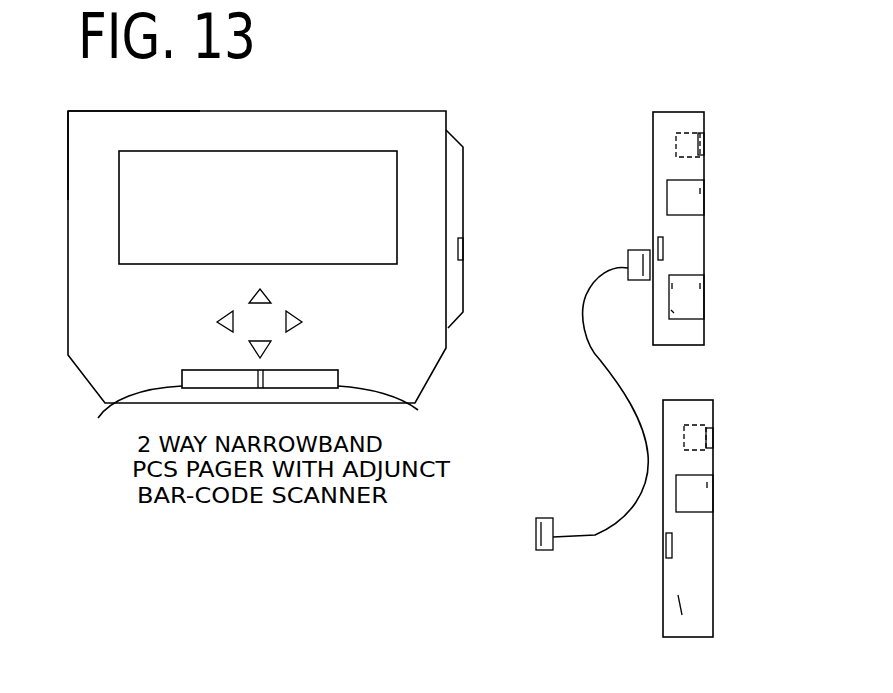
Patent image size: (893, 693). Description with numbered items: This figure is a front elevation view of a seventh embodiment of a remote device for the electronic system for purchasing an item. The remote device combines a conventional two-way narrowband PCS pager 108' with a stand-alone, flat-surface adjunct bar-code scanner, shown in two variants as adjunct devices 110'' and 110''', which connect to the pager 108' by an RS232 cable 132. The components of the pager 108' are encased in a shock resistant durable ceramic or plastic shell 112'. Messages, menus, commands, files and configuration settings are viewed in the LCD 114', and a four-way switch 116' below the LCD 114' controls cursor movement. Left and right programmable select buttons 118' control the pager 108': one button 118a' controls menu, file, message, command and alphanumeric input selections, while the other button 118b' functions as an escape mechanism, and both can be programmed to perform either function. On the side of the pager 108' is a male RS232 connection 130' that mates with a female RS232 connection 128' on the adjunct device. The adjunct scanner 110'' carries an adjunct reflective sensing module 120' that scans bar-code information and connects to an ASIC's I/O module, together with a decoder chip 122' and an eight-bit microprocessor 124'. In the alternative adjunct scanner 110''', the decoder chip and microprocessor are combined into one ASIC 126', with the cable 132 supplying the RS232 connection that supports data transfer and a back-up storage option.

The two-way pager 108' is at (265, 203).
The adjunct bar-code scanner 110'' is at (711, 194).
The adjunct bar-code scanner 110''' is at (646, 534).
The shell 112' is at (112, 137).
The LCD 114' is at (258, 168).
The four-way switch 116' is at (204, 323).
The programmable select buttons 118' is at (217, 367).
The select button 118a' is at (127, 416).
The select button 118b' is at (415, 406).
The adjunct reflective sensing module 120' is at (741, 136).
The decoder chip 122' is at (737, 196).
The 8-bit microprocessor 124' is at (738, 297).
The ASIC 126' is at (736, 483).
The female RS232 connection 128' is at (732, 246).
The male RS232 connection 130' is at (509, 248).
The RS232 cable 132 is at (604, 371).